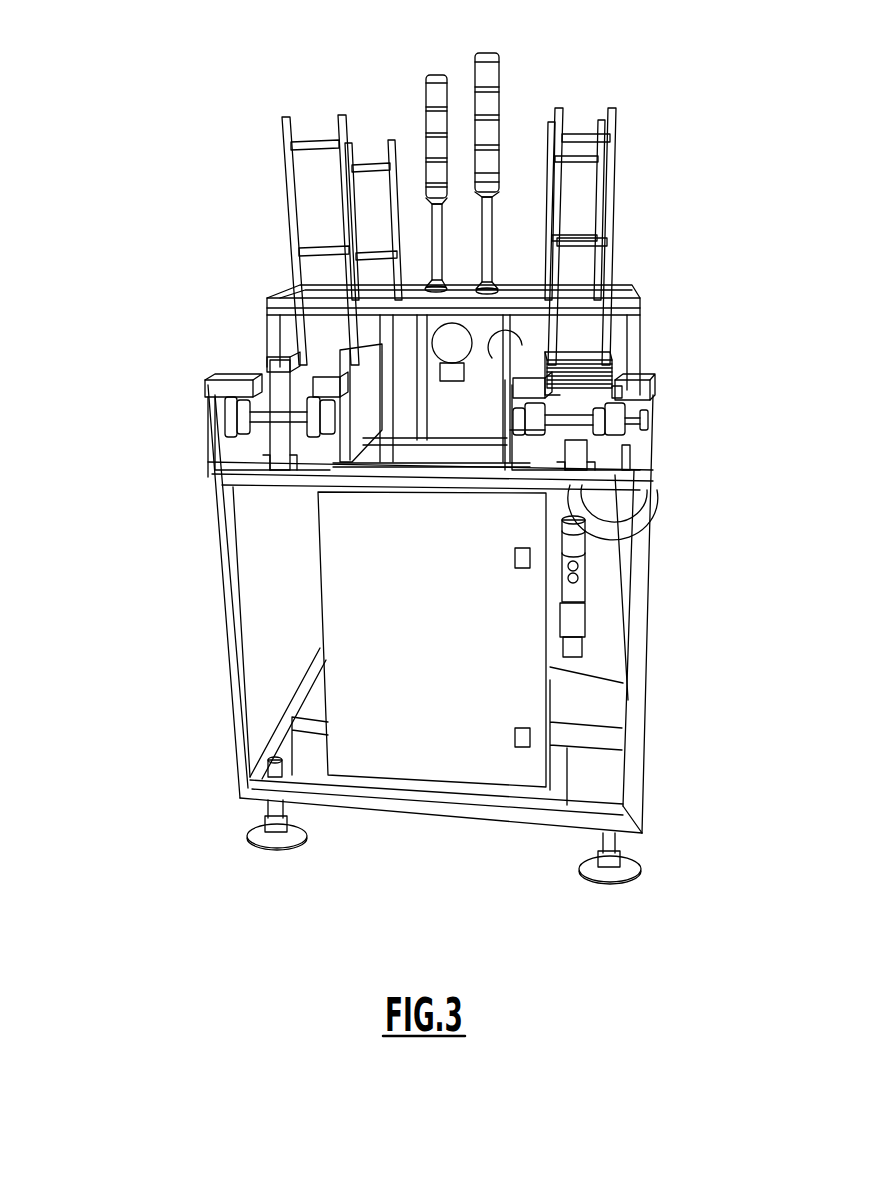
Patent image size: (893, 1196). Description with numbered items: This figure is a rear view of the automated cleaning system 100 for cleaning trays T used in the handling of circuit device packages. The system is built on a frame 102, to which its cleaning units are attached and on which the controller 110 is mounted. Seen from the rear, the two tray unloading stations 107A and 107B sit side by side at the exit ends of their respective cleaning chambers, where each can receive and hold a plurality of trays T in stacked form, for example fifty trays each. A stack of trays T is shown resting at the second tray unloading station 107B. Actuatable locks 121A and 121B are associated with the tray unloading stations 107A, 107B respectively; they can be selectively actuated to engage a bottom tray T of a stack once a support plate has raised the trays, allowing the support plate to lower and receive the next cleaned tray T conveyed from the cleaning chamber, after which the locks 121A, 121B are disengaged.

The automated cleaning system 100 is at (148, 76).
The frame 102 is at (675, 647).
The controller 110 is at (370, 647).
The tray unloading station 107A is at (198, 385).
The tray unloading station 107B is at (662, 393).
The actuatable lock 121A is at (264, 405).
The actuatable lock 121B is at (616, 410).
The tray T is at (628, 347).